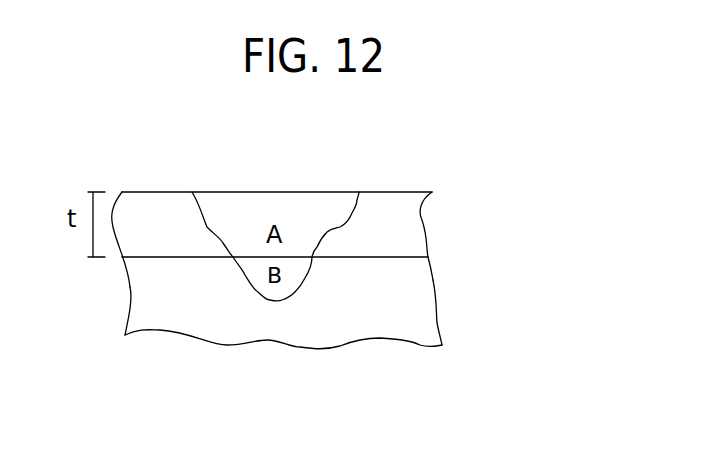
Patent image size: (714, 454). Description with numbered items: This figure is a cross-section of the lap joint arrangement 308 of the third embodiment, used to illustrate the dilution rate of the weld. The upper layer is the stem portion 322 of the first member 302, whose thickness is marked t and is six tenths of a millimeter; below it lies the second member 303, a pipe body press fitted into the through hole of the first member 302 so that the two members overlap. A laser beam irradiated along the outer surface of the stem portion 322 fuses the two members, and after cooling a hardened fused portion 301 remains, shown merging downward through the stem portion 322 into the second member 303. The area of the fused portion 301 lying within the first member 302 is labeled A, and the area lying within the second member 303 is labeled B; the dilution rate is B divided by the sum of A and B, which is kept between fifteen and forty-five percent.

The lap joint arrangement 308 is at (403, 288).
The first member 302 is at (426, 204).
The fused portion 301 is at (327, 205).
The stem portion 322 is at (350, 245).
The second member 303 is at (388, 313).